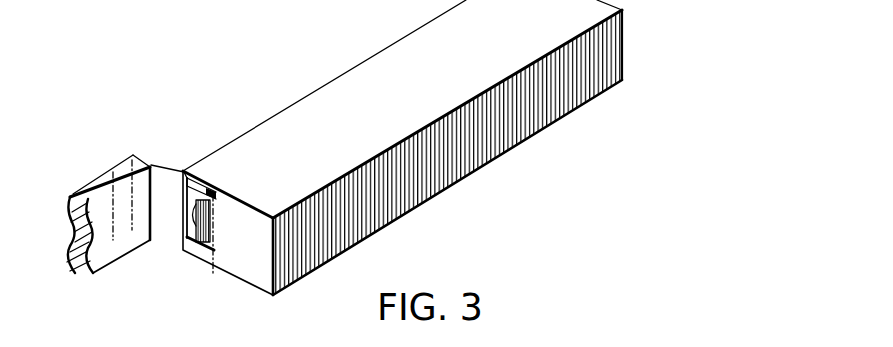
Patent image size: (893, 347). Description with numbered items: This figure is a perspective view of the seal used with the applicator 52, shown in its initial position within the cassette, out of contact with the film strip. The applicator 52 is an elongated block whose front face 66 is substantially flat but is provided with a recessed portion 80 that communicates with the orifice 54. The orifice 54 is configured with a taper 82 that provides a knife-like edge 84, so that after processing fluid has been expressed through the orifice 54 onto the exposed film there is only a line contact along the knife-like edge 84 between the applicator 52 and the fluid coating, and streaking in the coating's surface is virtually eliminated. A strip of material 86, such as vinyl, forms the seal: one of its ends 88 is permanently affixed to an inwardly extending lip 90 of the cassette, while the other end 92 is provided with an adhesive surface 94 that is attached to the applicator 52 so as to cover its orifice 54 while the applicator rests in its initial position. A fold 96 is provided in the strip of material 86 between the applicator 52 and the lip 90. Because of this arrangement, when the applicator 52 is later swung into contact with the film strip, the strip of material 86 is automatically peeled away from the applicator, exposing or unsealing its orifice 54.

The applicator 52 is at (433, 91).
The orifice 54 is at (210, 200).
The front face 66 is at (249, 274).
The recessed portion 80 is at (186, 218).
The taper 82 is at (186, 241).
The knife-like edge 84 is at (207, 190).
The strip of material 86 is at (162, 178).
The end of strip of material 88 is at (117, 166).
The inwardly extending lip 90 is at (81, 193).
The other end of strip of material 92 is at (189, 174).
The adhesive surface 94 is at (216, 191).
The fold 96 is at (206, 262).